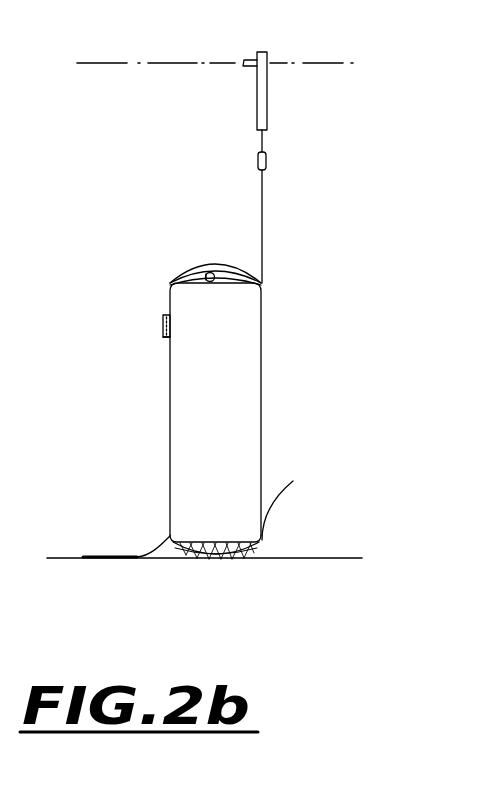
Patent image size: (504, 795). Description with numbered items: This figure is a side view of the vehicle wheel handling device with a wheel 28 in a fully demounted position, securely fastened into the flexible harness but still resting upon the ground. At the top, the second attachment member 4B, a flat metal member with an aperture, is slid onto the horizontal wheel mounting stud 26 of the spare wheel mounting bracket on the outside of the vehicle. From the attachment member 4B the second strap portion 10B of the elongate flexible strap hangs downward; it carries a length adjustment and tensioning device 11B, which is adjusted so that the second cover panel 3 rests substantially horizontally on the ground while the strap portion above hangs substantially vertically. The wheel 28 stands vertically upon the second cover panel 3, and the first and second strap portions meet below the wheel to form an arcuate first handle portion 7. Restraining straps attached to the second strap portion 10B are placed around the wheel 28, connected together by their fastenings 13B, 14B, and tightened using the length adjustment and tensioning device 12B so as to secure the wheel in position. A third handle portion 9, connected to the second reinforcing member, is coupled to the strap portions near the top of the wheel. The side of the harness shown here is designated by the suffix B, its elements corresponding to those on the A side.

The wheel mounting stud 26 is at (250, 61).
The second attachment member 4B is at (268, 60).
The length adjustment and tensioning device 11B is at (267, 162).
The second strap portion 10B is at (263, 200).
The third handle portion 9 is at (262, 284).
The length adjustment and tensioning device 12B is at (208, 271).
The wheel 28 is at (232, 385).
The fastening 13B is at (170, 313).
The fastening 14B is at (168, 337).
The position B is at (278, 490).
The first handle portion 7 is at (112, 556).
The second cover panel 3 is at (232, 560).